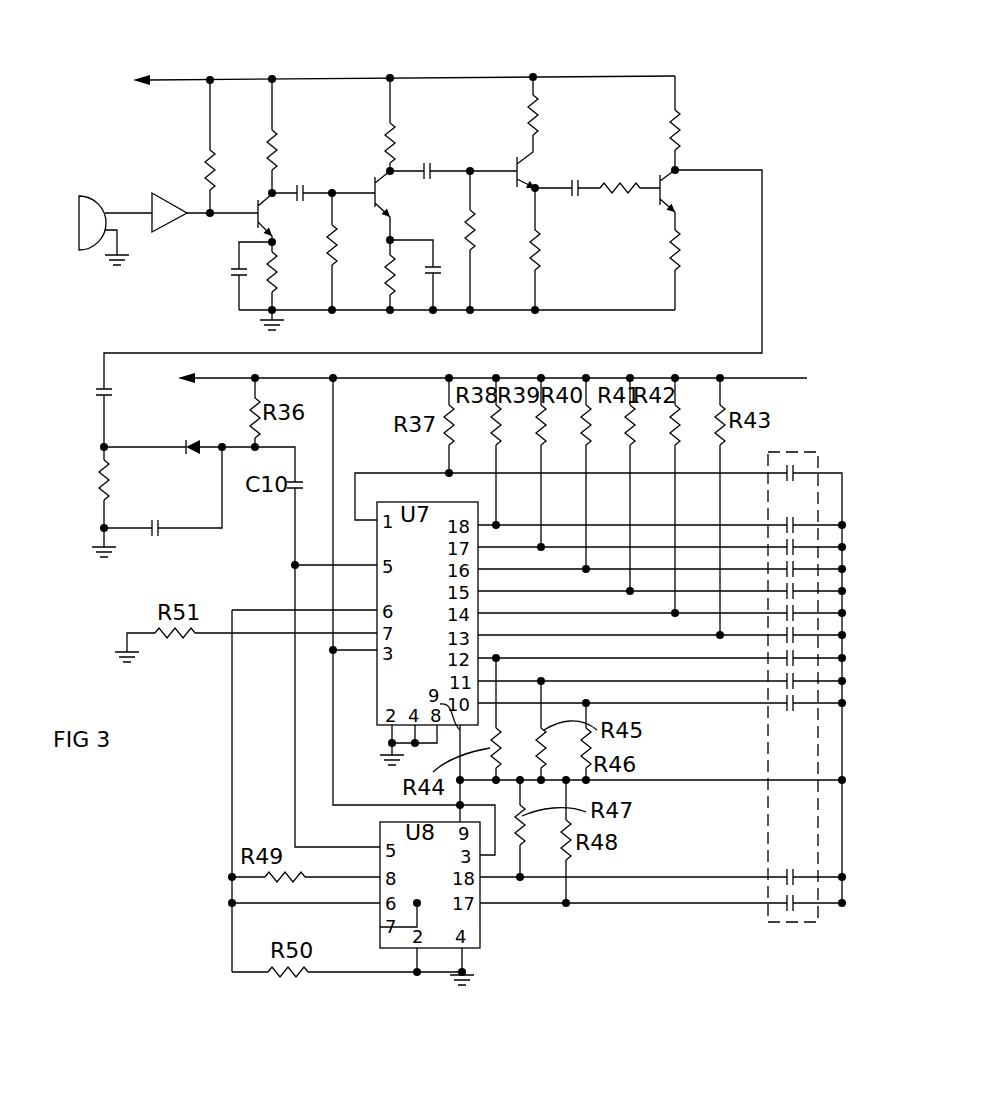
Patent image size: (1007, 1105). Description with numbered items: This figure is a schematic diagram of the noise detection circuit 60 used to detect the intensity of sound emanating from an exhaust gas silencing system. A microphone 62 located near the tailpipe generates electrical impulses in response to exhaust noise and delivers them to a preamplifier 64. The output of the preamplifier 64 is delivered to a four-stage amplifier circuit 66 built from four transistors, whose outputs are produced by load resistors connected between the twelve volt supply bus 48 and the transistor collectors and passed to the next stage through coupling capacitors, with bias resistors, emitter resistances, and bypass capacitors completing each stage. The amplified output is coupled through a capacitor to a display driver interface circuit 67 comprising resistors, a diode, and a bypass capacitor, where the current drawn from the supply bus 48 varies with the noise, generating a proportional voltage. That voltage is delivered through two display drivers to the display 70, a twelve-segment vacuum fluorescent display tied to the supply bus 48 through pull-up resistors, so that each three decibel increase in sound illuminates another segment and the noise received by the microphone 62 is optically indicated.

The 12 volt supply bus 48 is at (170, 78).
The noise detection circuit 60 is at (741, 75).
The microphone 62 is at (80, 196).
The preamplifier 64 is at (157, 193).
The four-stage amplifier circuit 66 is at (687, 68).
The display driver interface circuit 67 is at (104, 588).
The display 70 is at (818, 914).